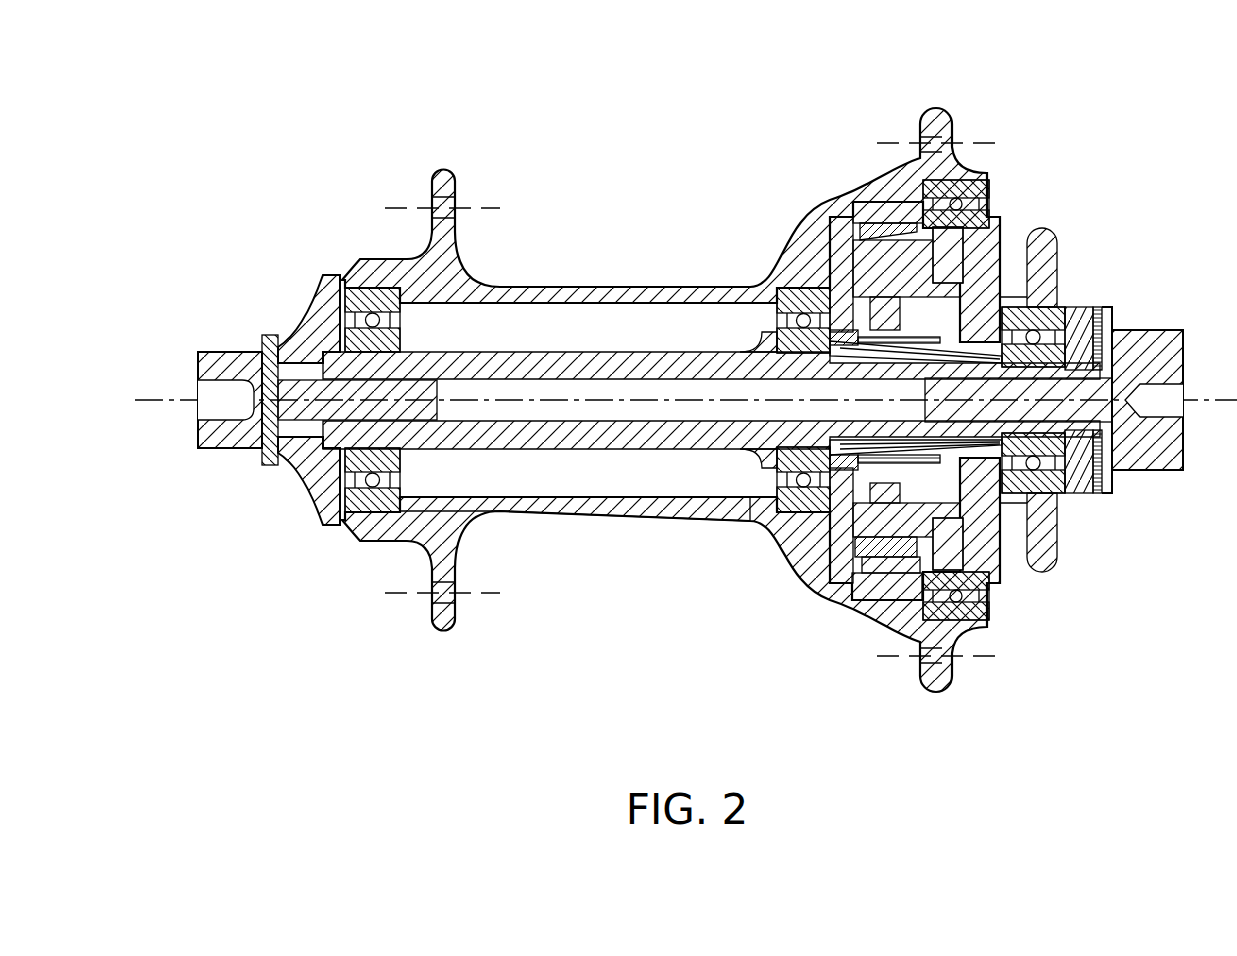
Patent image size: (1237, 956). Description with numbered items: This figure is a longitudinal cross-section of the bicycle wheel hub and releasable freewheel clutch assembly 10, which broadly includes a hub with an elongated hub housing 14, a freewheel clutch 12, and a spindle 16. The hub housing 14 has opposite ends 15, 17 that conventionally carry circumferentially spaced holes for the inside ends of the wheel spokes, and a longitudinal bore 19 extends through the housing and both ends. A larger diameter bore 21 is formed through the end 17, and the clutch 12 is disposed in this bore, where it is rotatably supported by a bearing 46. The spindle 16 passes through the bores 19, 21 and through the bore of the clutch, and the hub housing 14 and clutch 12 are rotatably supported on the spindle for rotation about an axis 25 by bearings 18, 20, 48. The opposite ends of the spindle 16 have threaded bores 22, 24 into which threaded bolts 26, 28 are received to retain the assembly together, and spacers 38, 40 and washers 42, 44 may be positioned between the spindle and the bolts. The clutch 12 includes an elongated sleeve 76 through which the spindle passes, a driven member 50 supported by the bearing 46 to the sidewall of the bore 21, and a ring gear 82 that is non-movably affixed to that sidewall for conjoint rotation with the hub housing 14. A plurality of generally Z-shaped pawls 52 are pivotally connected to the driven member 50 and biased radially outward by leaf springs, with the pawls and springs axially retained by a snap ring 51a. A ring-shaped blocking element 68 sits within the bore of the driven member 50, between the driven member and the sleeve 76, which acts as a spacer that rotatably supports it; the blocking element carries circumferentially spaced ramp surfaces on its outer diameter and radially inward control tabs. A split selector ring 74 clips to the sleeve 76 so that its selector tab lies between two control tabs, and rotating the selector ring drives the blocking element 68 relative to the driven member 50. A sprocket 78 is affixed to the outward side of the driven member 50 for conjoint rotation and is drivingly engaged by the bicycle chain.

The bicycle wheel hub and releasable freewheel clutch assembly 10 is at (652, 138).
The freewheel clutch 12 is at (843, 518).
The hub housing 14 is at (632, 292).
The end 15 is at (446, 176).
The spindle 16 is at (553, 360).
The end 17 is at (929, 113).
The bearing 18 is at (373, 303).
The longitudinal bore 19 is at (578, 482).
The bearing 20 is at (778, 298).
The larger diameter bore 21 is at (845, 540).
The threaded bore 22 is at (298, 512).
The threaded bore 24 is at (1095, 418).
The axis 25 is at (1213, 402).
The threaded bolt 26 is at (224, 357).
The threaded bolt 28 is at (1157, 343).
The spacer 38 is at (305, 320).
The spacer 40 is at (1080, 310).
The washer 42 is at (258, 455).
The washer 44 is at (1100, 310).
The bearing 46 is at (977, 623).
The bearing 48 is at (1057, 490).
The driven member 50 is at (993, 212).
The snap ring 51a is at (845, 500).
The pawl 52 is at (785, 293).
The blocking element 68 is at (860, 237).
The selector ring 74 is at (927, 457).
The sleeve 76 is at (838, 497).
The sprocket 78 is at (1050, 253).
The ring gear 82 is at (873, 217).